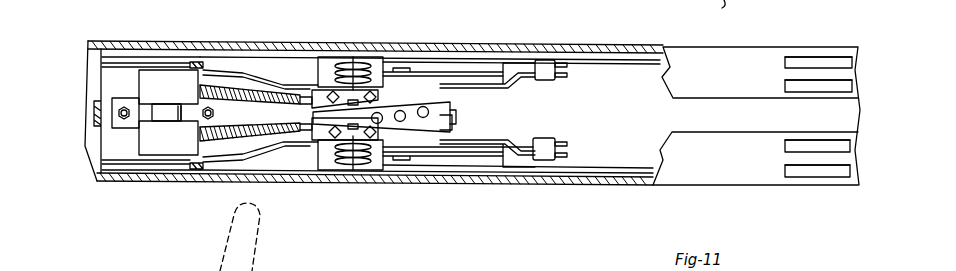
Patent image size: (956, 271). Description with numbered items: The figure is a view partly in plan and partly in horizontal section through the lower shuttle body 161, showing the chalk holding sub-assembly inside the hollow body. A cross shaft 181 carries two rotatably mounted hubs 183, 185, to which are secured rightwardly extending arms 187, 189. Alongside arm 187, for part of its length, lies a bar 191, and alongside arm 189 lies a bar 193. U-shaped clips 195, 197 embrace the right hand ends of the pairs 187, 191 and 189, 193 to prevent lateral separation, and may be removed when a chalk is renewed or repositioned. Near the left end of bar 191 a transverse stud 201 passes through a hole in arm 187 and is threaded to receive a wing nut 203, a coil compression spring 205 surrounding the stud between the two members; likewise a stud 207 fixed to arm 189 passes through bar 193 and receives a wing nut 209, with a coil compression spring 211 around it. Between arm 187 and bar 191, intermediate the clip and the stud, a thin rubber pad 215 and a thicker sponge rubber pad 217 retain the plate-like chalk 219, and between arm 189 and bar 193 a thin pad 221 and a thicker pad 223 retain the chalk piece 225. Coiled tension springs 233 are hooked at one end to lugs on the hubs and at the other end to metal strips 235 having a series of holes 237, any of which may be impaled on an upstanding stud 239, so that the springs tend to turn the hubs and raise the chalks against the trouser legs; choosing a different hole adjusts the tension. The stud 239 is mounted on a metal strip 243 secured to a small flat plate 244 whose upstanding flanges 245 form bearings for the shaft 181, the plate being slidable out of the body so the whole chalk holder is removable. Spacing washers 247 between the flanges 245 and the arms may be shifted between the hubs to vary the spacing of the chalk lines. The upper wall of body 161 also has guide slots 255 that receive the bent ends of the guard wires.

The lower shuttle body 161 is at (582, 47).
The cross shaft 181 is at (165, 171).
The hub 183 is at (150, 81).
The hub 185 is at (148, 138).
The arm 187 is at (248, 72).
The arm 189 is at (268, 160).
The bar 191 is at (490, 58).
The bar 193 is at (510, 143).
The U-shaped clip 195 is at (548, 77).
The U-shaped clip 197 is at (553, 140).
The transverse stud 201 is at (354, 67).
The wing nut 203 is at (333, 96).
The coil compression spring 205 is at (340, 63).
The transverse stud 207 is at (353, 158).
The wing nut 209 is at (330, 134).
The coil compression spring 211 is at (342, 163).
The thin rubber pad 215 is at (487, 85).
The thick compressible pad 217 is at (450, 64).
The chalk 219 is at (430, 71).
The thin rubber pad 221 is at (493, 162).
The thick compressible pad 223 is at (523, 167).
The chalk piece 225 is at (465, 160).
The coiled tension spring 233 is at (270, 124).
The metal strip 235 is at (453, 113).
The holes 237 is at (423, 106).
The upstanding stud 239 is at (400, 122).
The metal strip 243 is at (113, 98).
The flat plate 244 is at (112, 158).
The upstanding flanges 245 is at (122, 58).
The spacing washers 247 is at (203, 62).
The guide slot 255 is at (784, 86).